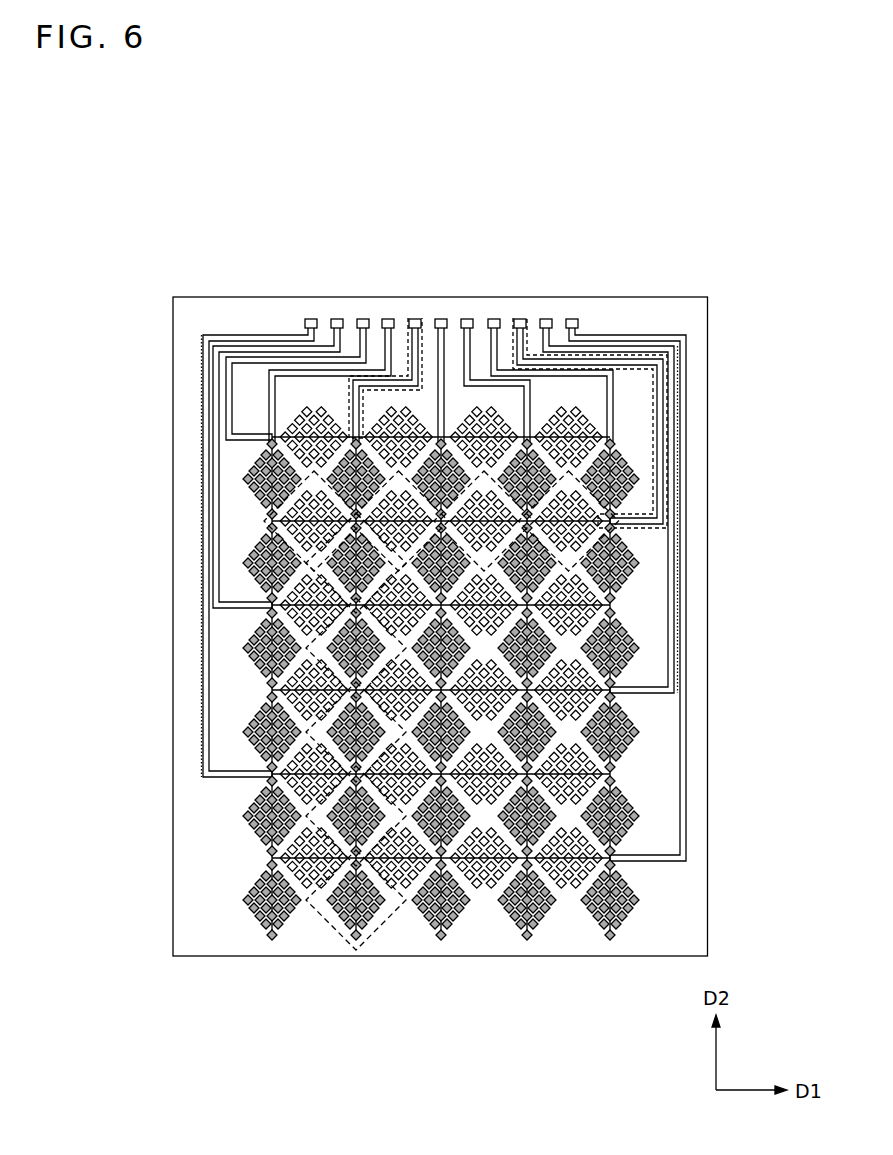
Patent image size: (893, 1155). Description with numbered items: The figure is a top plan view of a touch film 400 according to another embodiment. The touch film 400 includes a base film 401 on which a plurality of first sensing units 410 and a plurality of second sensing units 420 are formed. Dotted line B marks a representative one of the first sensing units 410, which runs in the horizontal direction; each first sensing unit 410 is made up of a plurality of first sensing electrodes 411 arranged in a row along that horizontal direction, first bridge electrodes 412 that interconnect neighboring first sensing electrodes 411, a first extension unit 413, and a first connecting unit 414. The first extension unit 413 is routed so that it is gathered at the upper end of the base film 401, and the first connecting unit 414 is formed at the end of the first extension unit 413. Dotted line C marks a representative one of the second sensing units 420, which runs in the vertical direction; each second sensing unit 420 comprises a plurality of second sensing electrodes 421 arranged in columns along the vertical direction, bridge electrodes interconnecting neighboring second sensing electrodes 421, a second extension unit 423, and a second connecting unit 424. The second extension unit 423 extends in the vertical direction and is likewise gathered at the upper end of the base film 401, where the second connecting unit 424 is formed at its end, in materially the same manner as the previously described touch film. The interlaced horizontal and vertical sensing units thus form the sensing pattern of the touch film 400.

The touch film 400 is at (703, 181).
The base film 401 is at (190, 852).
The first sensing unit 410 is at (492, 215).
The first sensing electrode 411 is at (481, 502).
The first bridge electrode 412 is at (526, 516).
The first extension unit 413 is at (645, 505).
The first connecting unit 414 is at (519, 320).
The second sensing unit 420 is at (398, 215).
The second sensing electrode 421 is at (327, 463).
The second extension unit 423 is at (353, 432).
The second connecting unit 424 is at (418, 320).
The dotted line B is at (661, 537).
The dotted line C is at (328, 578).